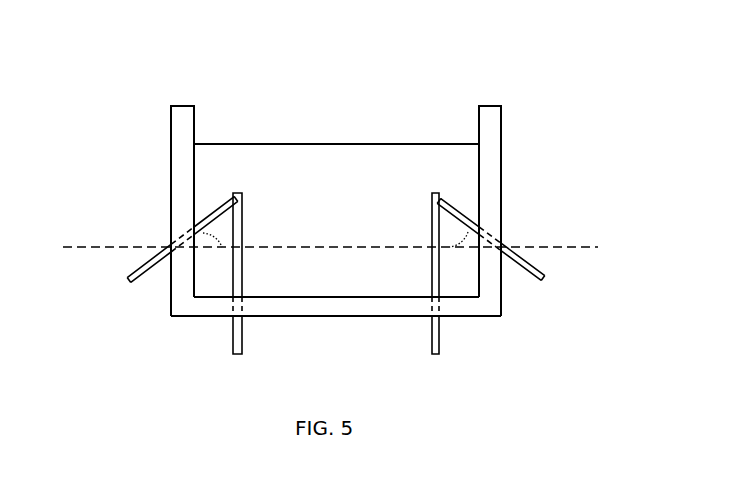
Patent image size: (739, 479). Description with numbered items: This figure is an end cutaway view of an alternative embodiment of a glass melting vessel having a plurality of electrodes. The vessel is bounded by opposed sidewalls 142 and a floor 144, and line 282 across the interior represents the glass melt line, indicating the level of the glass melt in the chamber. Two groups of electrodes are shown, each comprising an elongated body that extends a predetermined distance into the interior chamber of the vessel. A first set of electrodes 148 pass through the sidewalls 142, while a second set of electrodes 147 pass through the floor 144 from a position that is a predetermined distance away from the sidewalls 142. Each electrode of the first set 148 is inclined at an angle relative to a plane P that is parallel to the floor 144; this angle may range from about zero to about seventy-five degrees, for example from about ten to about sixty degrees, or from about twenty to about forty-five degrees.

The sidewall 142 is at (171, 172).
The floor 144 is at (326, 317).
The second set of electrodes 147 is at (242, 234).
The first set of electrodes 148 is at (158, 254).
The glass melt line 282 is at (320, 143).
The plane P is at (100, 248).